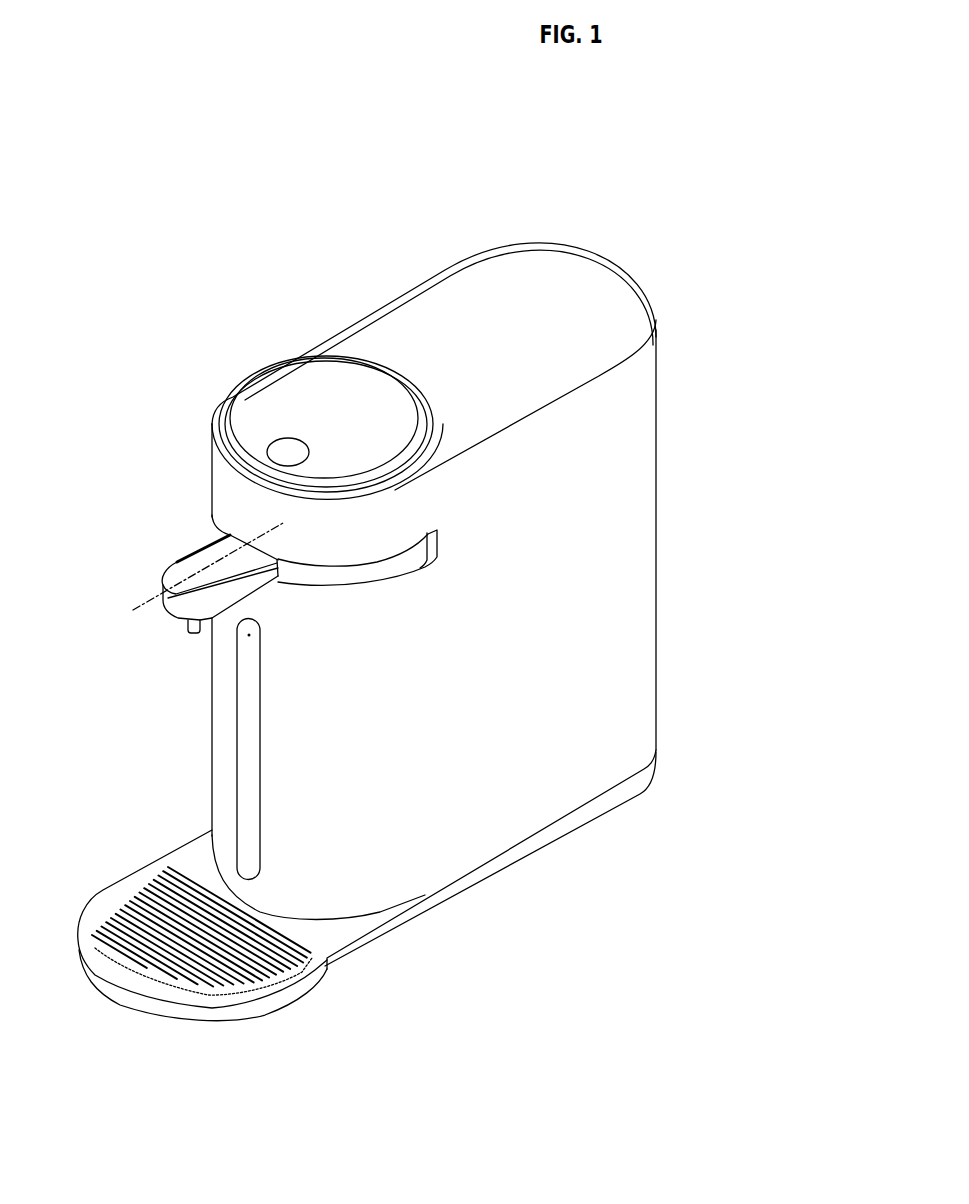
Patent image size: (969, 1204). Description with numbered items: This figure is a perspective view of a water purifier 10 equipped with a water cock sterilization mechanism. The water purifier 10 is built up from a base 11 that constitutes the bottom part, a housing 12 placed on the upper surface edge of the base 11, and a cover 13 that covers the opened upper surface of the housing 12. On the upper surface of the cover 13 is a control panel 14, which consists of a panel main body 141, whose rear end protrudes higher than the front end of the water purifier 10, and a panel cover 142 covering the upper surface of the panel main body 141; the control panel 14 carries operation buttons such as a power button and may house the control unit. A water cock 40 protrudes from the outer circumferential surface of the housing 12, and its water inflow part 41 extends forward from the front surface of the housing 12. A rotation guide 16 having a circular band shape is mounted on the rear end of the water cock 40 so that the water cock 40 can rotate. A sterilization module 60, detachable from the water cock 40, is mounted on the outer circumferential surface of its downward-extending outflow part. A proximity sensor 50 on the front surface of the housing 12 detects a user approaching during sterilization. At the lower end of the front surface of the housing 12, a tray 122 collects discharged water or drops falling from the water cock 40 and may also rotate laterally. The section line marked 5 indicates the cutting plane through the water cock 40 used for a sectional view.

The water purifier 10 is at (549, 208).
The base 11 is at (552, 832).
The housing 12 is at (600, 638).
The tray 122 is at (128, 977).
The cover 13 is at (582, 280).
The control panel 14 is at (293, 272).
The panel main body 141 is at (422, 403).
The panel cover 142 is at (312, 380).
The rotation guide 16 is at (367, 573).
The water cock 40 is at (178, 556).
The water inflow part 41 is at (208, 557).
The proximity sensor 50 is at (248, 640).
The sterilization module 60 is at (187, 628).
The section line 5- 5 is at (283, 523).